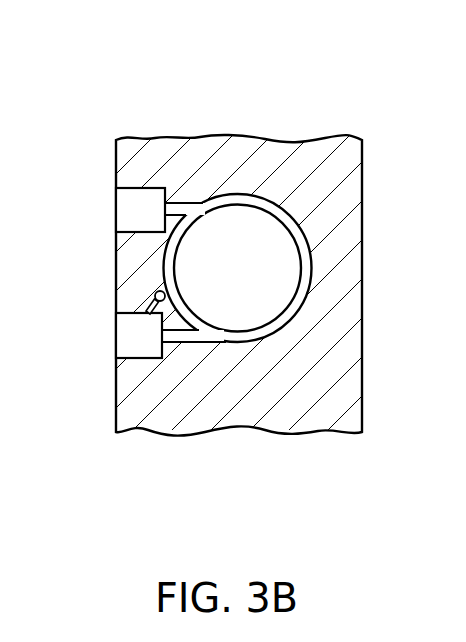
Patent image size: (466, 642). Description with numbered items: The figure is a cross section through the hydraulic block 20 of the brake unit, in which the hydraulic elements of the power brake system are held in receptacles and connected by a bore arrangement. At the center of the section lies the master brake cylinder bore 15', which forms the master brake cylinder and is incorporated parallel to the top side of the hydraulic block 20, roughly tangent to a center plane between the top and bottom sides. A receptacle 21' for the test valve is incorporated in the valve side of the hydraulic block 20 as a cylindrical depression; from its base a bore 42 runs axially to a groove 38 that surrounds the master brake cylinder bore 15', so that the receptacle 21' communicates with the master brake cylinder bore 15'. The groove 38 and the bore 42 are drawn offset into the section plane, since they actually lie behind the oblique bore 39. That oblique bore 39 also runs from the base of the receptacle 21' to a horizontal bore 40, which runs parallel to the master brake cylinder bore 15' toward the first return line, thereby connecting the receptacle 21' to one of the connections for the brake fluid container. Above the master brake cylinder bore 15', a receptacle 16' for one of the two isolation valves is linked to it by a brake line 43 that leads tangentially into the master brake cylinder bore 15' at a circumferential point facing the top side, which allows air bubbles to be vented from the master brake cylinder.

The hydraulic block 20 is at (149, 122).
The groove 38 is at (287, 217).
The master brake cylinder bore 15' is at (297, 268).
The brake line 43 is at (188, 205).
The bore 42 is at (190, 345).
The receptacle for isolation valve 16' is at (102, 210).
The receptacle for test valve 21' is at (99, 335).
The oblique bore 39 is at (147, 308).
The horizontal bore 40 is at (155, 294).